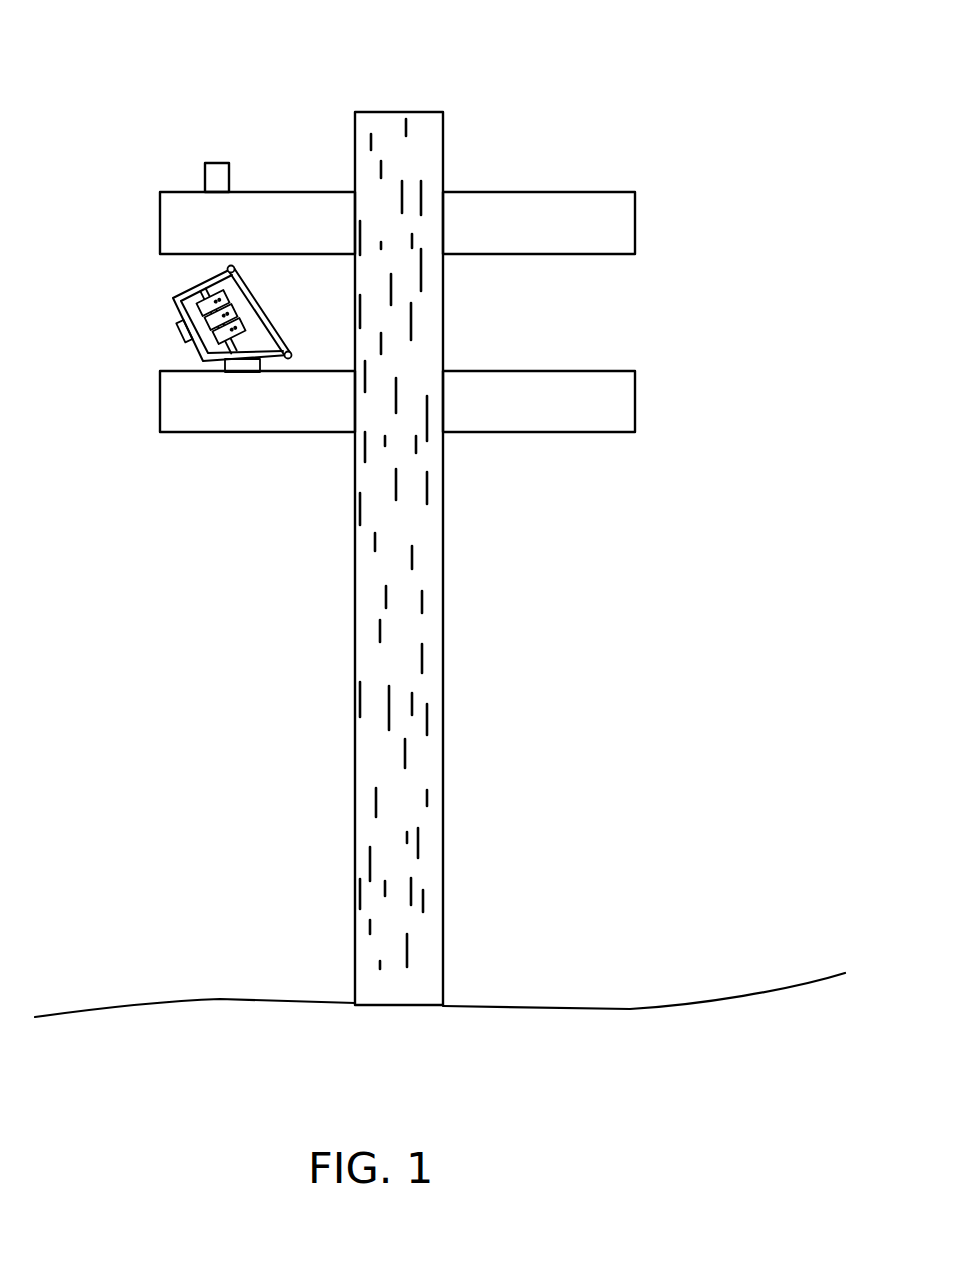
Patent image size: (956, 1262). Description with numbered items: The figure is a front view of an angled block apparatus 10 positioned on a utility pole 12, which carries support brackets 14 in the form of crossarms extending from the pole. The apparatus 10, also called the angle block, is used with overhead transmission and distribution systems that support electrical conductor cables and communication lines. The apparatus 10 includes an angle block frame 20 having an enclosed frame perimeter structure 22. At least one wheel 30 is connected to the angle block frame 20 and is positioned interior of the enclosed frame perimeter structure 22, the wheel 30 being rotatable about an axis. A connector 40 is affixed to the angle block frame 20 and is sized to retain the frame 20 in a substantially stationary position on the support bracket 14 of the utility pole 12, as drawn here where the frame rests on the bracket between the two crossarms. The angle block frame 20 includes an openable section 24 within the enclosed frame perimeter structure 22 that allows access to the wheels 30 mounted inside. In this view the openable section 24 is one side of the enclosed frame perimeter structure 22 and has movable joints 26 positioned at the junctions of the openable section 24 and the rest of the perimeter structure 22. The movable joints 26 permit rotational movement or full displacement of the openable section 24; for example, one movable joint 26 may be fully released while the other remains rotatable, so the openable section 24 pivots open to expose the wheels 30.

The angled block apparatus 10 is at (171, 46).
The utility pole 12 is at (388, 125).
The support bracket 14 is at (306, 202).
The angle block frame 20 is at (216, 362).
The enclosed frame perimeter structure 22 is at (190, 352).
The openable section 24 is at (262, 311).
The movable joint 26 is at (236, 269).
The wheel 30 is at (198, 302).
The connector 40 is at (178, 334).